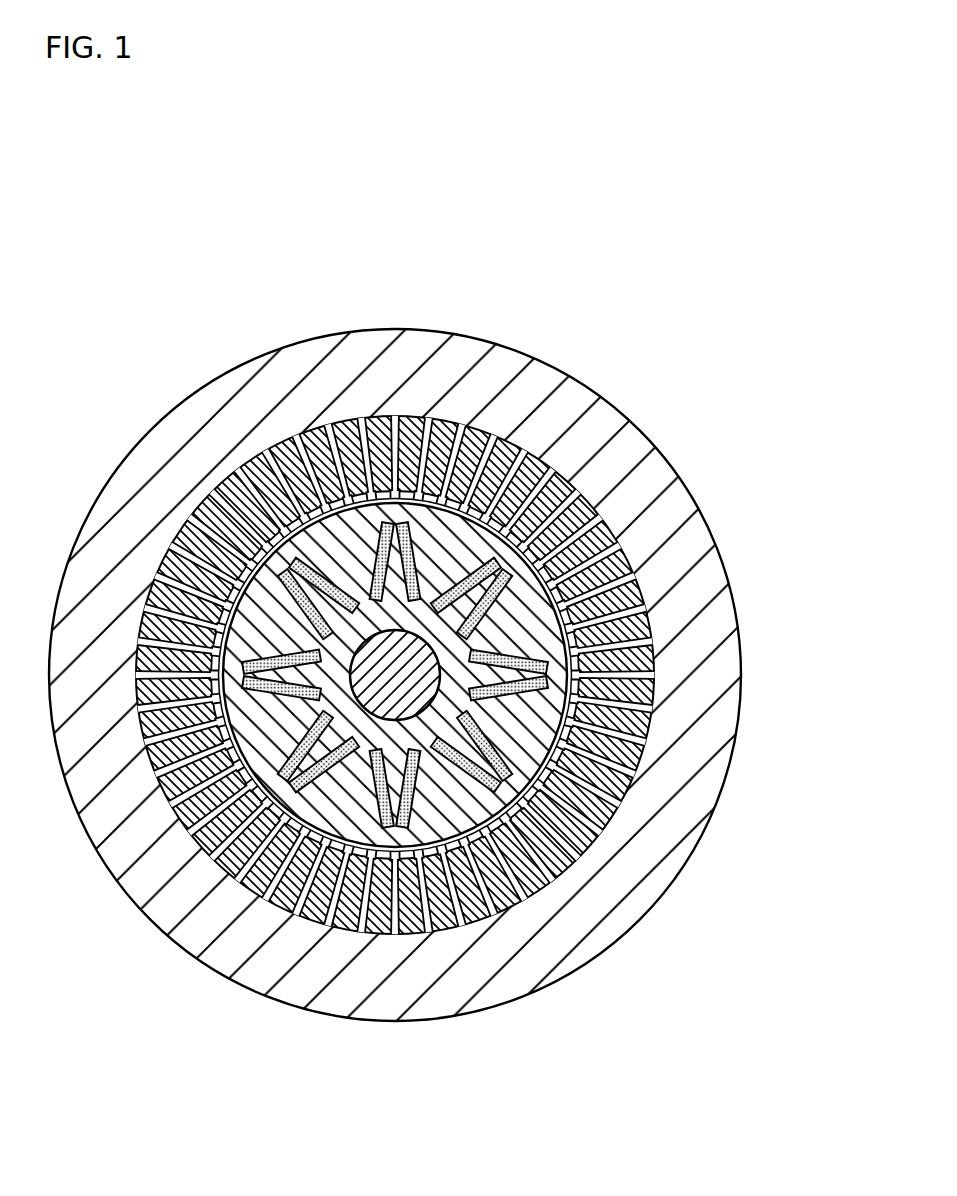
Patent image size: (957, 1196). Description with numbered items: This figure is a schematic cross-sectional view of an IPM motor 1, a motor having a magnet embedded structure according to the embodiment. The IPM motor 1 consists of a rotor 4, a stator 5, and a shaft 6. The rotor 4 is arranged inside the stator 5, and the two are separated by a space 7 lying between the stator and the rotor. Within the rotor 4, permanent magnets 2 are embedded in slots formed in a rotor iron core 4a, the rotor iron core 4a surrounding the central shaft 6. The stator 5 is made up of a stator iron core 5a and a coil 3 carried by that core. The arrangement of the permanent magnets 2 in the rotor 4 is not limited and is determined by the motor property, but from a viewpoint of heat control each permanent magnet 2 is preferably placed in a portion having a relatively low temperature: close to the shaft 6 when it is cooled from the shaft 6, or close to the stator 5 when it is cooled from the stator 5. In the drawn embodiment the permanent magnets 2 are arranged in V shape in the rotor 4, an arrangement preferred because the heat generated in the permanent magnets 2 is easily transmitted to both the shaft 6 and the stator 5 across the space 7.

The IPM motor 1 is at (412, 661).
The permanent magnet 2 is at (548, 545).
The coil 3 is at (527, 800).
The rotor 4 is at (577, 673).
The rotor iron core 4a is at (317, 430).
The stator 5 is at (634, 937).
The stator iron core 5a is at (119, 804).
The shaft 6 is at (410, 650).
The space 7 is at (525, 543).